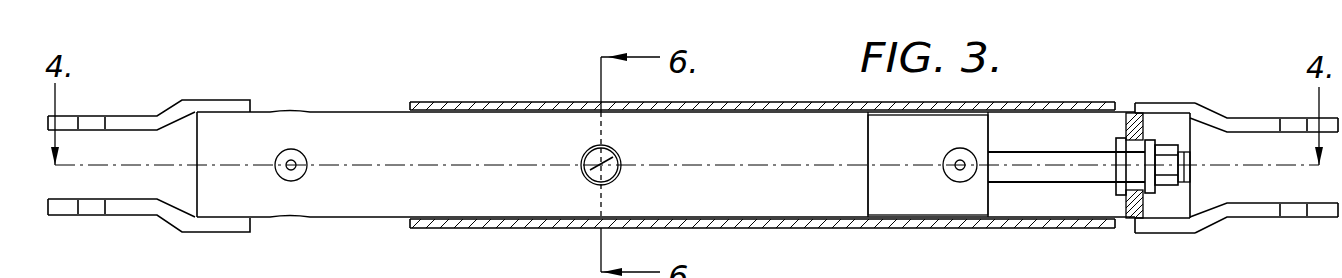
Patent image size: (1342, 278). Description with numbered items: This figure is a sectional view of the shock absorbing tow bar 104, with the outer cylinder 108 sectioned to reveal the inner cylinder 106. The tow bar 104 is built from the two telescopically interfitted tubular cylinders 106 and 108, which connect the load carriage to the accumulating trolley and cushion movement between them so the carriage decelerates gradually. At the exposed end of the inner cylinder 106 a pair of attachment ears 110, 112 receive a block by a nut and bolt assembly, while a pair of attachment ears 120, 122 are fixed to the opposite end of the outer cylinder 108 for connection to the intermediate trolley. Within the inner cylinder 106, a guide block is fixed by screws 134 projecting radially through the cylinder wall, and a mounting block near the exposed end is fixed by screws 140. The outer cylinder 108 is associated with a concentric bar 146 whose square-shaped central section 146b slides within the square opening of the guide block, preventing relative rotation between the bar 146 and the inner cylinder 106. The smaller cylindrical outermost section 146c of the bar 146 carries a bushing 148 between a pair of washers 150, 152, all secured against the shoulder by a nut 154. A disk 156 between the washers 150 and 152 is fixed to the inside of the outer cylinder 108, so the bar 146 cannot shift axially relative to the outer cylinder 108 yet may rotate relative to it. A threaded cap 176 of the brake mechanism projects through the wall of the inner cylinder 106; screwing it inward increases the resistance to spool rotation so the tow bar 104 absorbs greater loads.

The tow bar 104 is at (493, 102).
The inner cylinder 106 is at (375, 115).
The outer cylinder 108 is at (737, 102).
The attachment ear 110 is at (167, 112).
The attachment ear 112 is at (135, 220).
The attachment ear 120 is at (1258, 123).
The attachment ear 122 is at (1267, 210).
The screw 134 is at (948, 158).
The screw 140 is at (297, 157).
The bar 146 is at (1042, 177).
The square-shaped central section 146b is at (1012, 162).
The cylindrical outermost section 146c is at (1193, 155).
The bushing 148 is at (1163, 220).
The washer 150 is at (1118, 143).
The washer 152 is at (1148, 140).
The nut 154 is at (1193, 195).
The disk 156 is at (1124, 112).
The threaded cap 176 is at (617, 172).